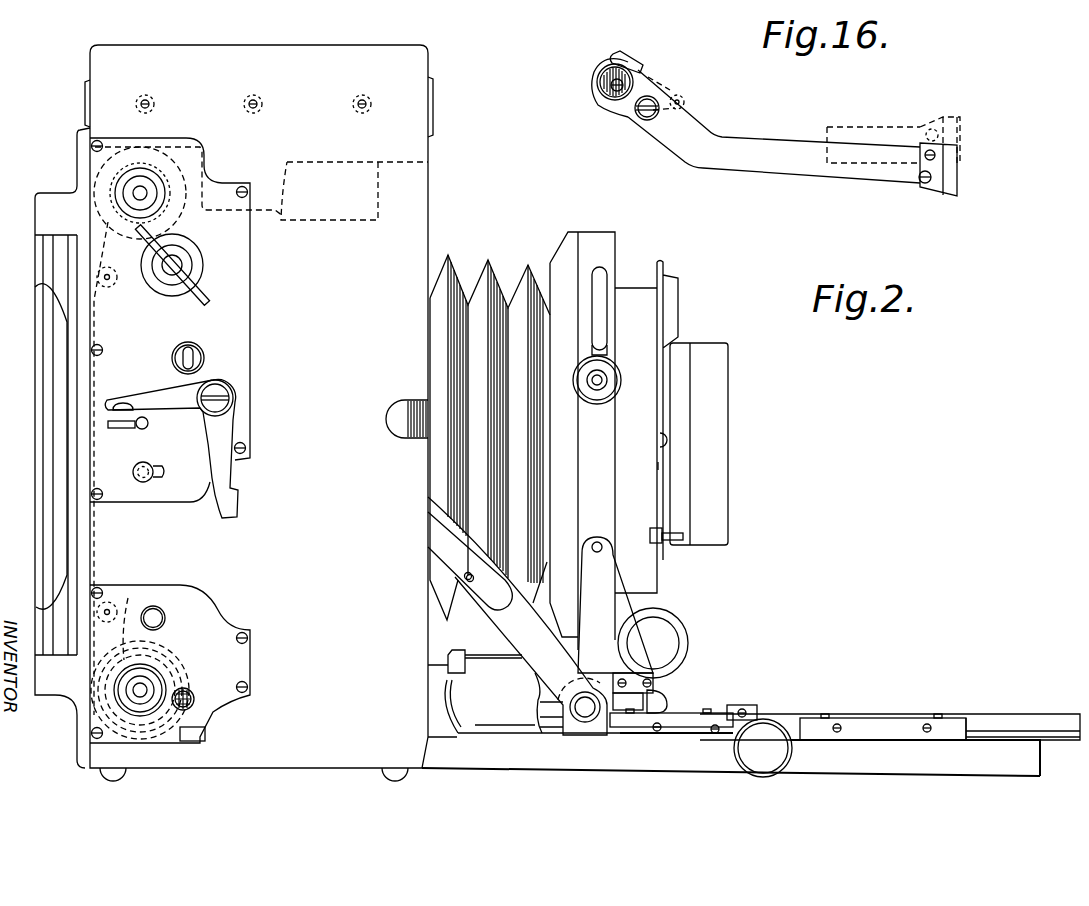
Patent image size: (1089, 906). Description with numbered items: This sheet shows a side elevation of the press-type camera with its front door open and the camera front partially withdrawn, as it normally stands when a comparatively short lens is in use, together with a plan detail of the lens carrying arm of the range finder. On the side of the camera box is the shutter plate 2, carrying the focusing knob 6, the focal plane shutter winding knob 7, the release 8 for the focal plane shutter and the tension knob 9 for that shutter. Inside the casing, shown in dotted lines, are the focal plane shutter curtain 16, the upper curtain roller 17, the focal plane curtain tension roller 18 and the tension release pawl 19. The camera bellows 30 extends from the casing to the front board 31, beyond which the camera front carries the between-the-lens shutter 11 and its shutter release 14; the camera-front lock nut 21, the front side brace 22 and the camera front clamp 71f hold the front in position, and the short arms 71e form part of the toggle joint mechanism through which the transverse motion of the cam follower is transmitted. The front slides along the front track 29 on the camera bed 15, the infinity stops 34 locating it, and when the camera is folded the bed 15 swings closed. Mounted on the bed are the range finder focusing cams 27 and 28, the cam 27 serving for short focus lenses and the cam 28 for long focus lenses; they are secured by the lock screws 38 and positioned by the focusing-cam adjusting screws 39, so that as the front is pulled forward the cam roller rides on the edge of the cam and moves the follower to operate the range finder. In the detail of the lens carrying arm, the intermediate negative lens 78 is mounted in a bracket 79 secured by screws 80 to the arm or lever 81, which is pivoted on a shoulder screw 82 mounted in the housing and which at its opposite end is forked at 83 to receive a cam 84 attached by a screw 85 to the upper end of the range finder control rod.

In FIG. 2, the shutter plate 2 is at (235, 320).
In FIG. 2, the focusing knob 6 is at (742, 748).
In FIG. 2, the focal plane shutter winding knob 7 is at (208, 297).
In FIG. 2, the release for the focal plane shutter 8 is at (236, 504).
In FIG. 2, the tension knob for the focal plane shutter 9 is at (145, 688).
In FIG. 2, the between-the-lens shutter 11 is at (635, 303).
In FIG. 2, the shutter release 14 is at (650, 529).
In FIG. 2, the camera bed 15 is at (1020, 763).
In FIG. 2, the focal plane shutter curtain 16 is at (96, 309).
In FIG. 2, the upper curtain roller 17 is at (148, 165).
In FIG. 2, the focal plane curtain tension roller 18 is at (127, 612).
In FIG. 2, the tension release pawl 19 is at (193, 722).
In FIG. 2, the camera-front lock nut 21 is at (607, 388).
In FIG. 2, the front side brace 22 is at (532, 654).
In FIG. 2, the range finder focusing cam 27 is at (660, 727).
In FIG. 2, the range finder focusing cam 28 is at (897, 727).
In FIG. 2, the front track 29 is at (1012, 716).
In FIG. 2, the camera bellows 30 is at (492, 282).
In FIG. 2, the front board for the bellows 31 is at (563, 248).
In FIG. 2, the infinity stops 34 is at (740, 706).
In FIG. 2, the lock screws 38 is at (707, 709).
In FIG. 2, the focusing-cam adjusting screws 39 is at (713, 731).
In FIG. 2, the short arms 71e is at (474, 652).
In FIG. 2, the camera front clamp 71f is at (680, 640).
In FIG. 16, the intermediate negative lens 78 is at (960, 164).
In FIG. 16, the bracket 79 is at (947, 195).
In FIG. 16, the screws 80 is at (922, 174).
In FIG. 16, the arm or lever 81 is at (748, 155).
In FIG. 16, the shoulder screw 82 is at (646, 113).
In FIG. 16, the fork 83 is at (638, 51).
In FIG. 16, the cam 84 is at (600, 82).
In FIG. 16, the screw 85 is at (603, 100).